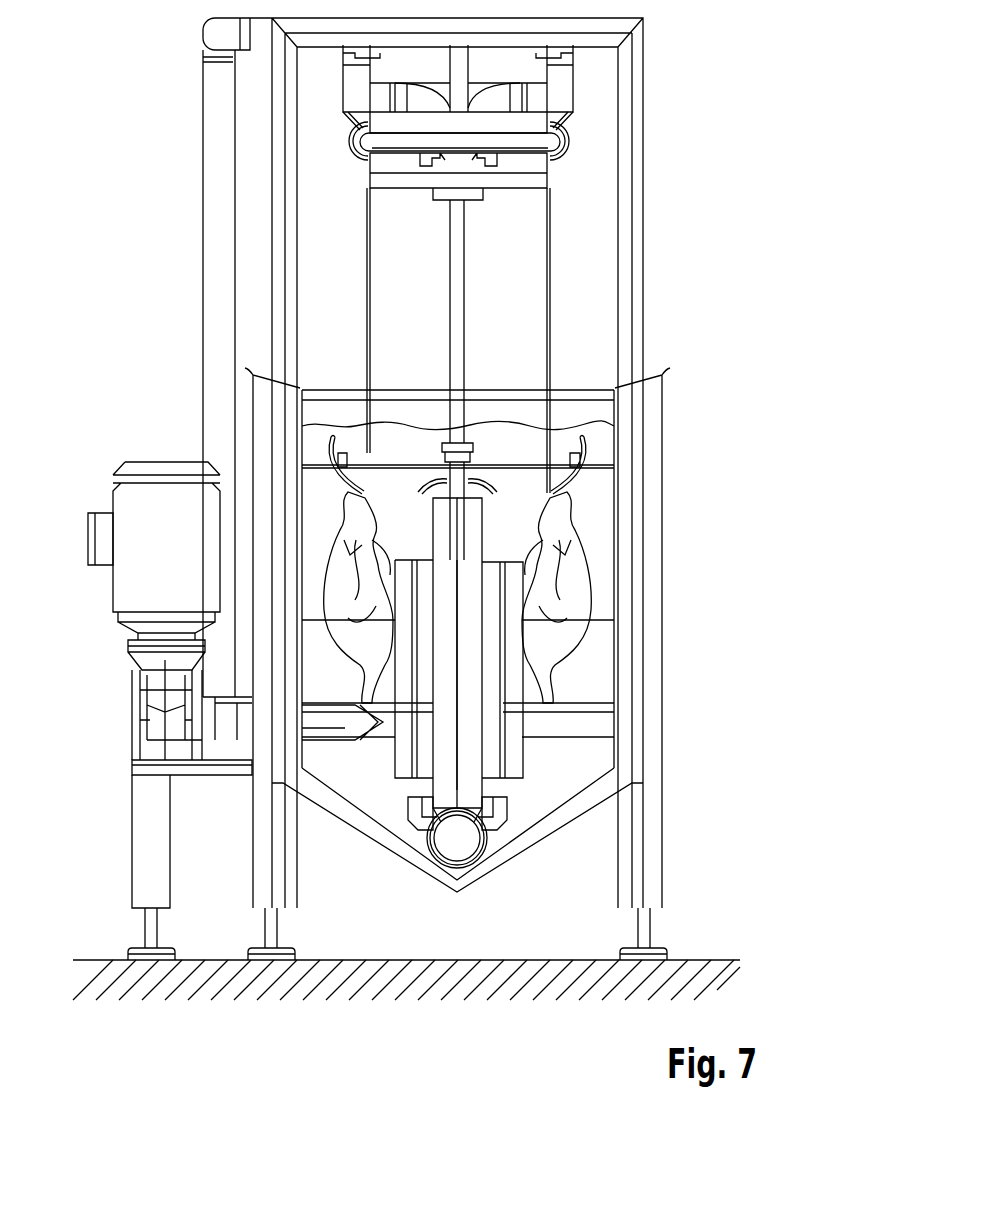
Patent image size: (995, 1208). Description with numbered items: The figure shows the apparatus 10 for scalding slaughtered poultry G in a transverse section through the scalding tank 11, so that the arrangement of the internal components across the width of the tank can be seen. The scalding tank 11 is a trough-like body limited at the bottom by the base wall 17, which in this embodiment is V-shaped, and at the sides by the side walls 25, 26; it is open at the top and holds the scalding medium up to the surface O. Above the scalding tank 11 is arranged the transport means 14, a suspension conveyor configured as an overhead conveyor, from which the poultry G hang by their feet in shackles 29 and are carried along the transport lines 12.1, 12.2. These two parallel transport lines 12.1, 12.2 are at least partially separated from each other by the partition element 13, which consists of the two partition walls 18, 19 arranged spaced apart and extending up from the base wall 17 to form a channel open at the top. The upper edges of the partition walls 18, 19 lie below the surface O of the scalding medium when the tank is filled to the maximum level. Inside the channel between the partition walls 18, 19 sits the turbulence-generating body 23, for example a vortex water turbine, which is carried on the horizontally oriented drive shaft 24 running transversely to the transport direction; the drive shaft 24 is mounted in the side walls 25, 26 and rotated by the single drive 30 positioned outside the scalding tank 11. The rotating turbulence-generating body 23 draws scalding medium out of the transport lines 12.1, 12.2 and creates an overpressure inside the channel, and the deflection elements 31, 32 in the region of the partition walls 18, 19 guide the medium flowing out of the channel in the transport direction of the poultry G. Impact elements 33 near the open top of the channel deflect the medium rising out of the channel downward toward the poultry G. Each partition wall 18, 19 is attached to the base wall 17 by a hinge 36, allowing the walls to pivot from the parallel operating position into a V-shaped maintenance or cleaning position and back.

The apparatus 10 is at (104, 116).
The scalding tank 11 is at (412, 405).
The transport line 12.1 is at (420, 476).
The transport line 12.2 is at (540, 476).
The partition element 13 is at (484, 550).
The transport means 14 is at (567, 140).
The base wall 17 is at (359, 815).
The partition wall 18 is at (433, 525).
The partition wall 19 is at (483, 525).
The turbulence-generating body 23 is at (420, 668).
The drive shaft 24 is at (583, 705).
The side wall 25 is at (270, 440).
The side wall 26 is at (638, 442).
The shackles 29 is at (366, 290).
The drive 30 is at (127, 587).
The deflection element 31 is at (398, 600).
The deflection element 32 is at (512, 750).
The impact element 33 is at (445, 478).
The hinge 36 is at (422, 862).
The poultry G is at (337, 598).
The surface O is at (517, 422).